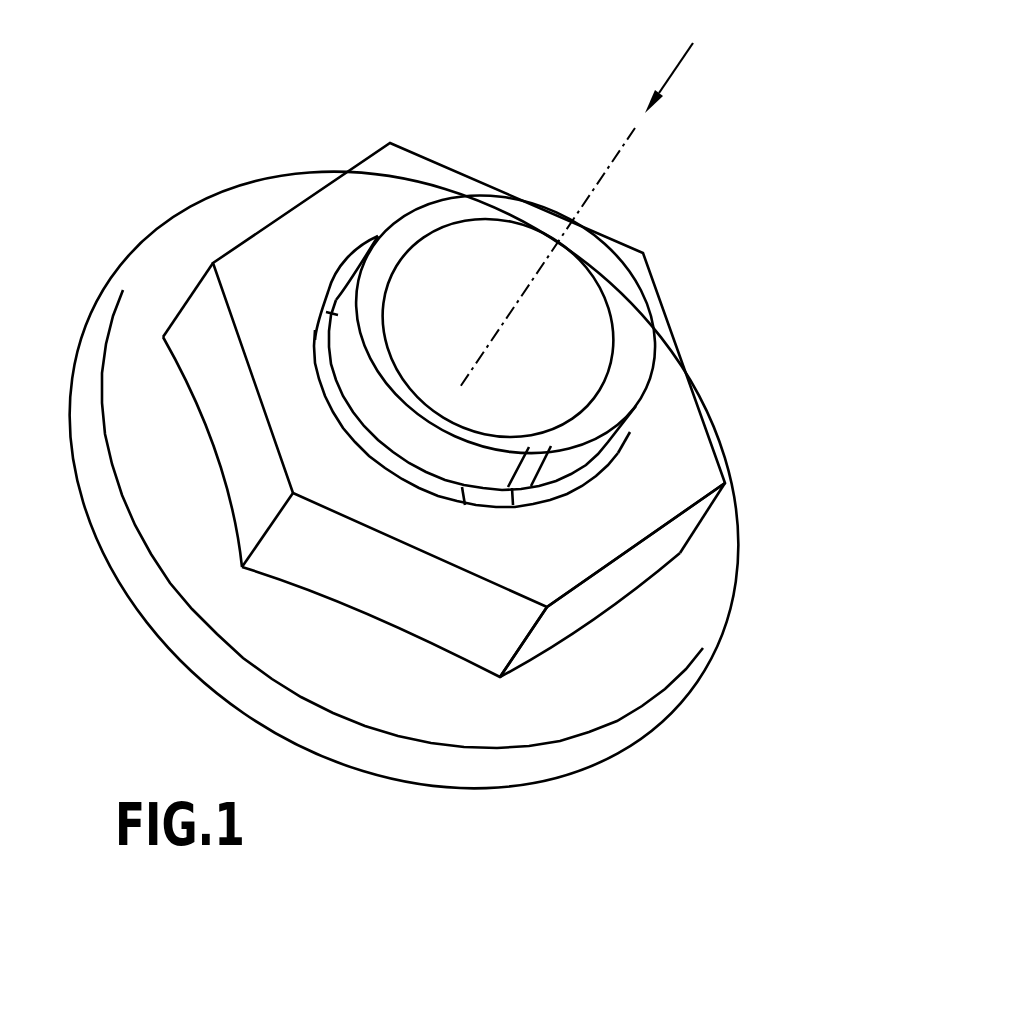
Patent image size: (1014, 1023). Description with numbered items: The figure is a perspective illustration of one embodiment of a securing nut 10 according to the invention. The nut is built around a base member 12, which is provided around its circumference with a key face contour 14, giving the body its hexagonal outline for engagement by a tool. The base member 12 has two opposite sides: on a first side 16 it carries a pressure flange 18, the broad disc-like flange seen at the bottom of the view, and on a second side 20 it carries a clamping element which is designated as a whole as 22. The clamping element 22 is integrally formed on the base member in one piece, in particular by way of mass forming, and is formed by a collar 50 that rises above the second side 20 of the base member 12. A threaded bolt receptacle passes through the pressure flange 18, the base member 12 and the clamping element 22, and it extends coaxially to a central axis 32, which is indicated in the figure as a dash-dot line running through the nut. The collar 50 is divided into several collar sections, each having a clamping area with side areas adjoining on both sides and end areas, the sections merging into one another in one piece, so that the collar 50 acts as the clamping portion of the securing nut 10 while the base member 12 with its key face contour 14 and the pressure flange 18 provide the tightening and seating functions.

The securing nut 10 is at (429, 465).
The base member 12 is at (490, 410).
The key face contour 14 is at (670, 543).
The first side 16 is at (613, 600).
The pressure flange 18 is at (616, 688).
The second side 20 is at (663, 367).
The clamping element 22 is at (631, 276).
The central axis 32 is at (607, 172).
The collar 50 is at (450, 479).